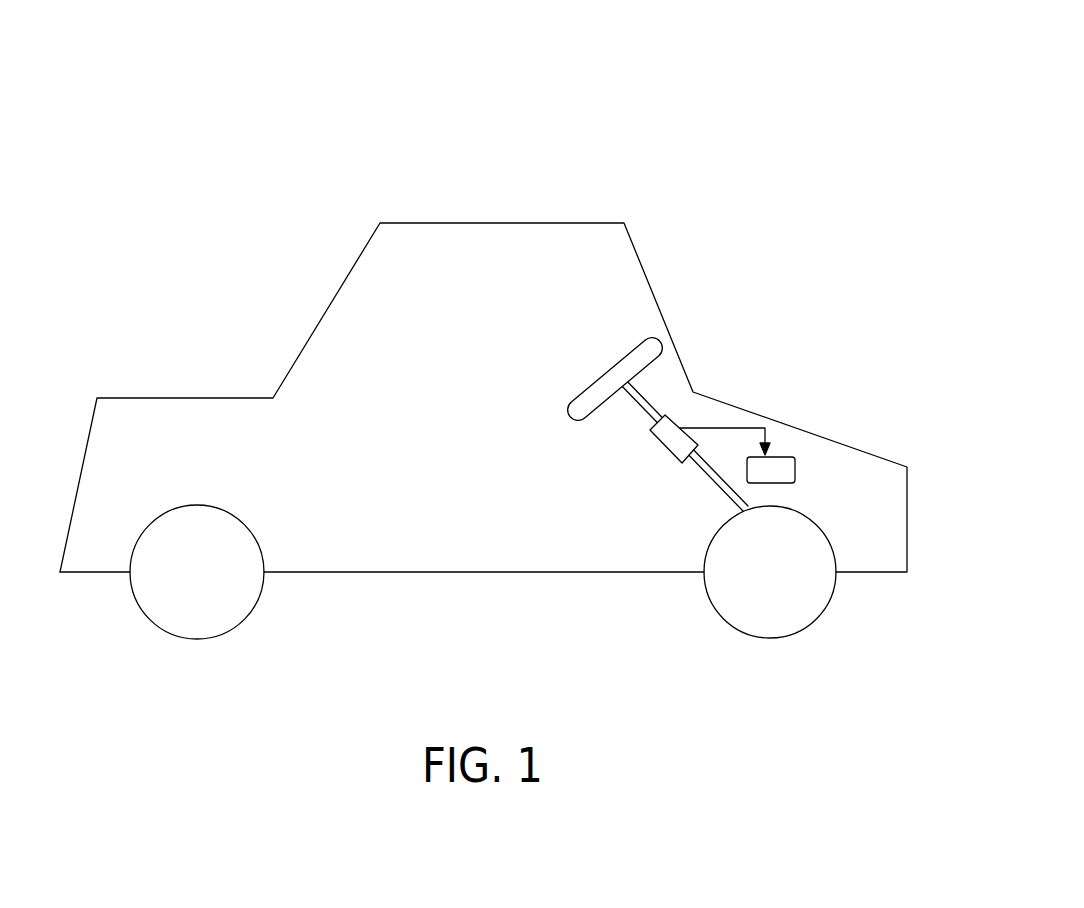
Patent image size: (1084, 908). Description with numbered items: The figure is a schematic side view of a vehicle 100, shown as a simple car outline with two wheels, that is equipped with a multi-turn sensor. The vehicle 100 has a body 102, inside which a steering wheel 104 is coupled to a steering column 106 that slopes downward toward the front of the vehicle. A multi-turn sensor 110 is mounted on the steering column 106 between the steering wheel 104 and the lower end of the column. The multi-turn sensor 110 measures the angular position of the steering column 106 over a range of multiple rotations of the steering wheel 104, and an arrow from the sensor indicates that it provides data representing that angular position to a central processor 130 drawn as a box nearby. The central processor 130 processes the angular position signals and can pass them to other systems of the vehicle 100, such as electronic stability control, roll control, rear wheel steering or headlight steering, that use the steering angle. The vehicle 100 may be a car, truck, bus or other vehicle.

The vehicle 100 is at (818, 100).
The body 102 is at (347, 278).
The steering wheel 104 is at (573, 403).
The steering column 106 is at (693, 390).
The multi-turn sensor 110 is at (667, 452).
The central processor 130 is at (795, 463).